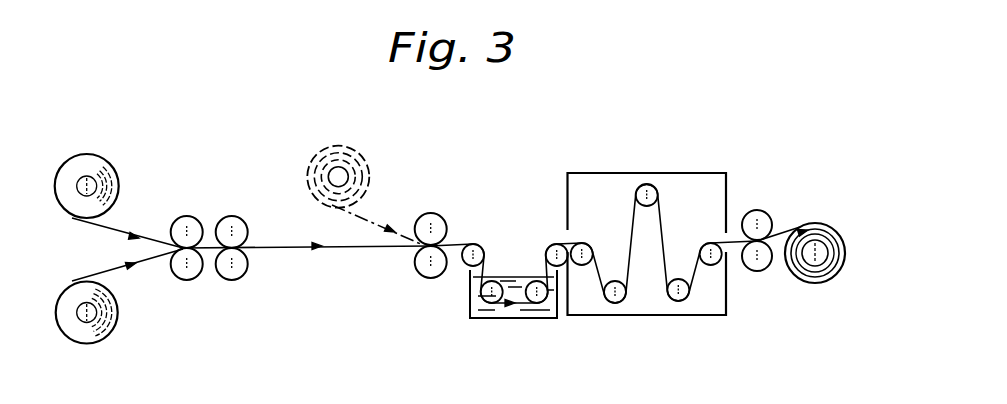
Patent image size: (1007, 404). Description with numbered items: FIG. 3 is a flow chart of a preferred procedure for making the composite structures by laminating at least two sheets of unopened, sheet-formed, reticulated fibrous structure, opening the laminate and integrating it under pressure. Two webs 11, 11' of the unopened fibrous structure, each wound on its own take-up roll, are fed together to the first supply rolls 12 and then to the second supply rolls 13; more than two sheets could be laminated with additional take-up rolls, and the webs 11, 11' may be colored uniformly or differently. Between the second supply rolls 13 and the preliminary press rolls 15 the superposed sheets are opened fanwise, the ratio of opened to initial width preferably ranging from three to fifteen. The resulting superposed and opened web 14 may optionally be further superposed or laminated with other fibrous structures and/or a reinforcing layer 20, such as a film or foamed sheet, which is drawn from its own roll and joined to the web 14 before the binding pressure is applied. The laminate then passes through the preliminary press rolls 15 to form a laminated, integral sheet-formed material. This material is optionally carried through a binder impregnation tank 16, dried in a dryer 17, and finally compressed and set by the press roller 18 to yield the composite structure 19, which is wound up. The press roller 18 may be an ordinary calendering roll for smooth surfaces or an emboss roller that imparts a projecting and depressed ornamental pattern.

The web 11 is at (97, 173).
The web 11' is at (111, 316).
The first supply rolls 12 is at (180, 216).
The second supply rolls 13 is at (229, 216).
The superposed and opened web 14 is at (280, 252).
The preliminary press rolls 15 is at (430, 213).
The binder impregnation tank 16 is at (511, 318).
The dryer 17 is at (637, 316).
The press roller 18 is at (753, 272).
The composite structure 19 is at (812, 228).
The reinforcing layer 20 is at (380, 224).